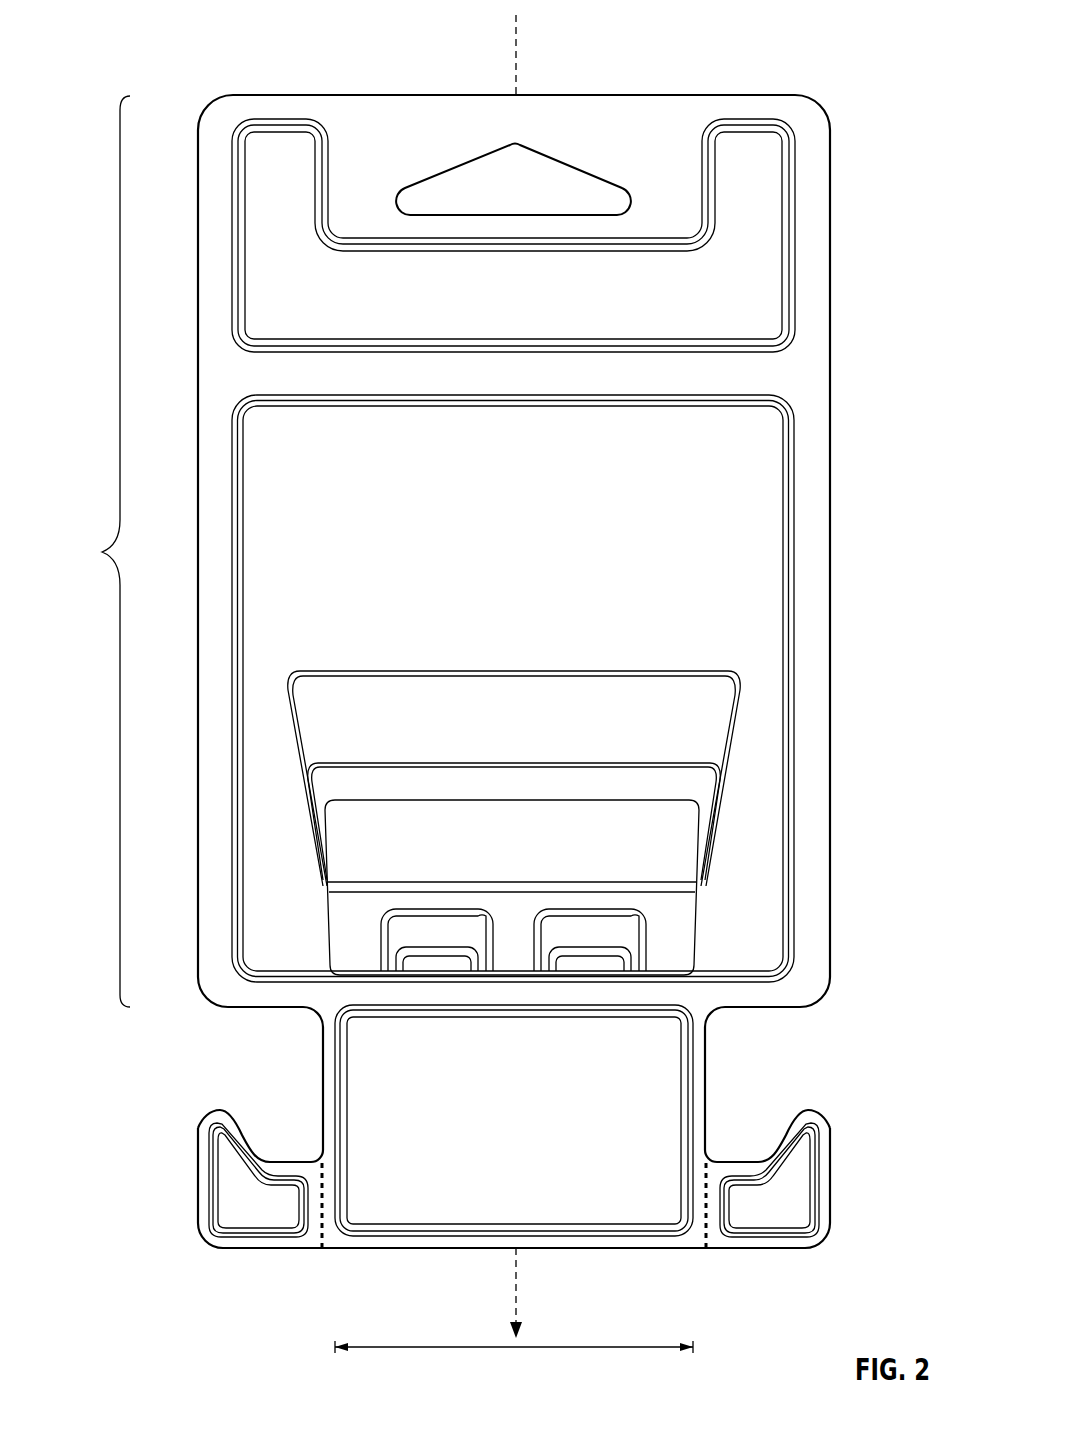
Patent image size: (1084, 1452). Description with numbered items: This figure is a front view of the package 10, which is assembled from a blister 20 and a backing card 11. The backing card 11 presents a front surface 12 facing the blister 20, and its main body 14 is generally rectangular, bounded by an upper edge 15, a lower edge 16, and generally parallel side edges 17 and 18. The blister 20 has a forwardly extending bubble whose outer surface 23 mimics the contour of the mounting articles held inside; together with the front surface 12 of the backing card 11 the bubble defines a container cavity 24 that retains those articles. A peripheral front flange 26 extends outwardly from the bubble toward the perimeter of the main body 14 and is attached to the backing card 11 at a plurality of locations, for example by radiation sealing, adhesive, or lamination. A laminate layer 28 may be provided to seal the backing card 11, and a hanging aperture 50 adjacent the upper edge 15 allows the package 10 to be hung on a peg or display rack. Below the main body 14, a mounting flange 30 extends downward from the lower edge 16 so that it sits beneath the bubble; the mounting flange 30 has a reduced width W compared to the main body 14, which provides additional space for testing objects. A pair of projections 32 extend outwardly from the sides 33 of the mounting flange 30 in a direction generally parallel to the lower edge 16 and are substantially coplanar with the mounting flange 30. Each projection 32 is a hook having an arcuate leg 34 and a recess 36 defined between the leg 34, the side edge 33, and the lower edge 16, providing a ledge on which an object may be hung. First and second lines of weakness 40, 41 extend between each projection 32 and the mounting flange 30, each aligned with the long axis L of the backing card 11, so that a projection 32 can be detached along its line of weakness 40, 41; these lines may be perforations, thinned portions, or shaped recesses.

The package 10 is at (146, 38).
The backing card 11 is at (223, 112).
The front surface 12 is at (802, 383).
The main body 14 is at (102, 551).
The upper edge 15 is at (355, 95).
The lower edge 16 is at (735, 1010).
The side edge 17 is at (198, 440).
The side edge 18 is at (832, 518).
The blister 20 is at (612, 859).
The outer surface 23 is at (359, 951).
The container cavity 24 is at (672, 911).
The peripheral front flange 26 is at (761, 806).
The laminate layer 28 is at (765, 202).
The mounting flange 30 is at (608, 1217).
The projections 32 is at (210, 1198).
The side edge 33 is at (323, 1063).
The arcuate leg 34 is at (215, 1118).
The recess 36 is at (268, 1096).
The first line of weakness 40 is at (322, 1250).
The second line of weakness 41 is at (706, 1250).
The hanging aperture 50 is at (565, 183).
The long axis L is at (518, 1293).
The width W is at (443, 1350).